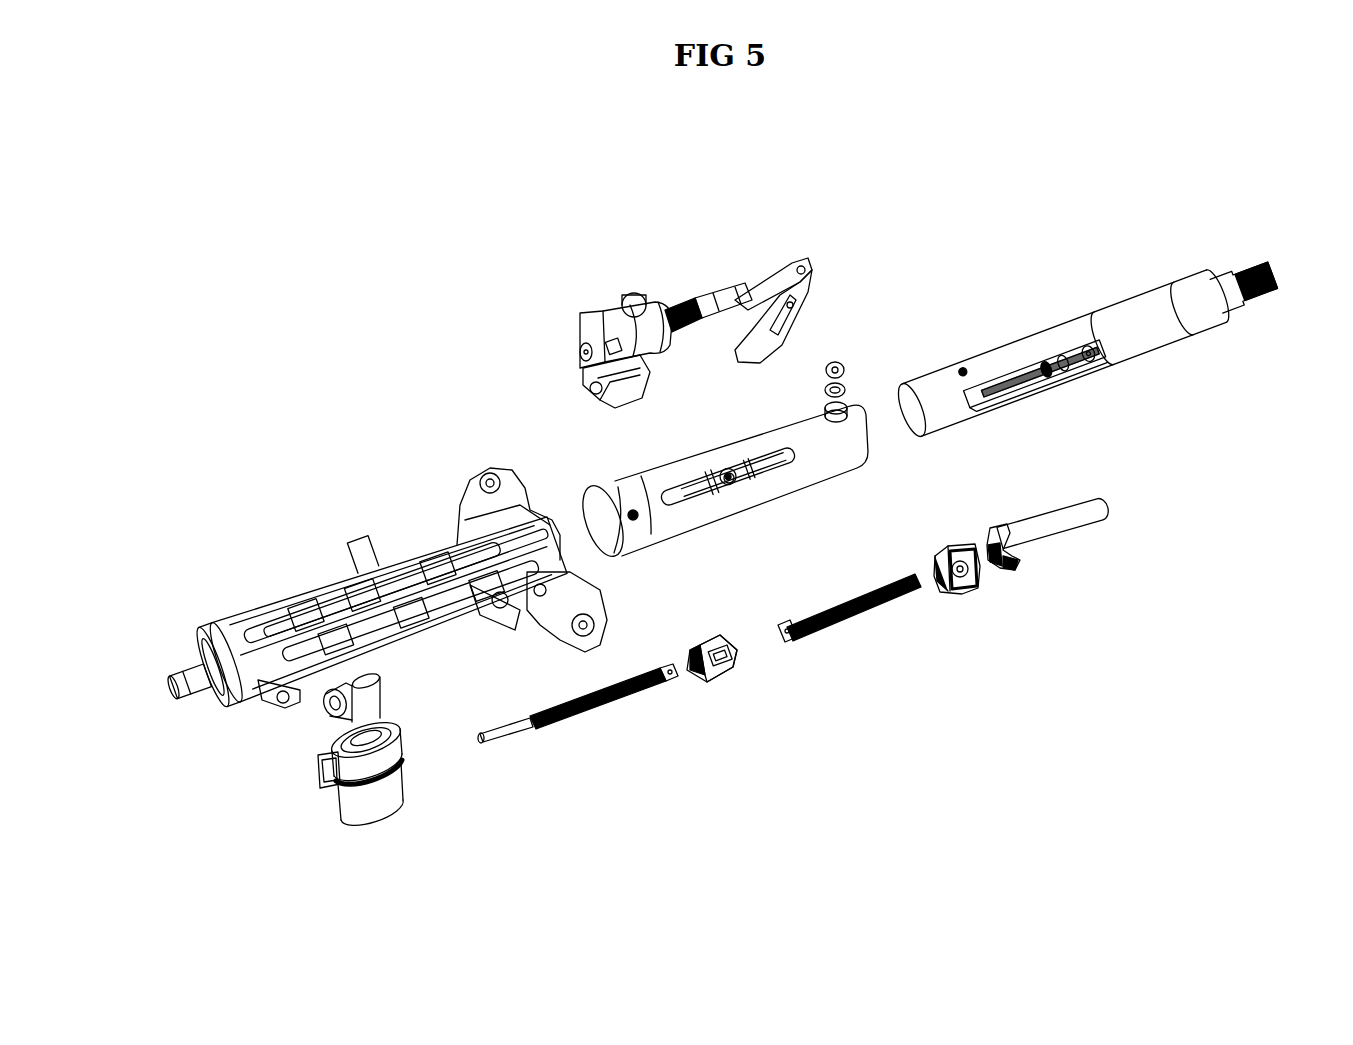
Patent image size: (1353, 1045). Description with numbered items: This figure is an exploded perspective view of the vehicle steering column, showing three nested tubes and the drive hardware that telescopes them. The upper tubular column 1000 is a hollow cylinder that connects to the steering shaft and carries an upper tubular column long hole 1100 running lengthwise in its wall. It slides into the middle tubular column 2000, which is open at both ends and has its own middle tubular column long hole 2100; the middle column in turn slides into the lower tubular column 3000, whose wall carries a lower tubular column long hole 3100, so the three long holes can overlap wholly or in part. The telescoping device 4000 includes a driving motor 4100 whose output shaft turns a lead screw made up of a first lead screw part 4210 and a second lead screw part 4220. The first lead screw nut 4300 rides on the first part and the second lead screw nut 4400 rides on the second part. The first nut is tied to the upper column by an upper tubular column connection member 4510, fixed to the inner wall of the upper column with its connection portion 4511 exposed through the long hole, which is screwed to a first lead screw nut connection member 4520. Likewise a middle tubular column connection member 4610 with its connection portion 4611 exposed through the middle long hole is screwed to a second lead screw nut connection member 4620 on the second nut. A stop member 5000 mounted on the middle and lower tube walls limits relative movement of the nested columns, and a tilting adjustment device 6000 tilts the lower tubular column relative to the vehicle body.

The upper tubular column 1000 is at (1145, 283).
The upper tubular column long hole 1100 is at (1002, 373).
The middle tubular column 2000 is at (610, 487).
The middle tubular column long hole 2100 is at (773, 457).
The lower tubular column 3000 is at (283, 597).
The lower tubular column long hole 3100 is at (390, 590).
The telescoping device 4000 is at (820, 662).
The driving motor 4100 is at (383, 788).
The first lead screw part 4210 is at (887, 607).
The second lead screw part 4220 is at (553, 723).
The first lead screw nut 4300 is at (1068, 533).
The second lead screw nut 4400 is at (717, 680).
The upper tubular column connection member 4510 is at (1053, 380).
The connection portion 4511 is at (1057, 357).
The first lead screw nut connection member 4520 is at (965, 583).
The middle tubular column connection member 4610 is at (707, 473).
The connection portion 4611 is at (730, 480).
The second lead screw nut connection member 4620 is at (684, 673).
The stop member 5000 is at (848, 390).
The tilting adjustment device 6000 is at (700, 270).